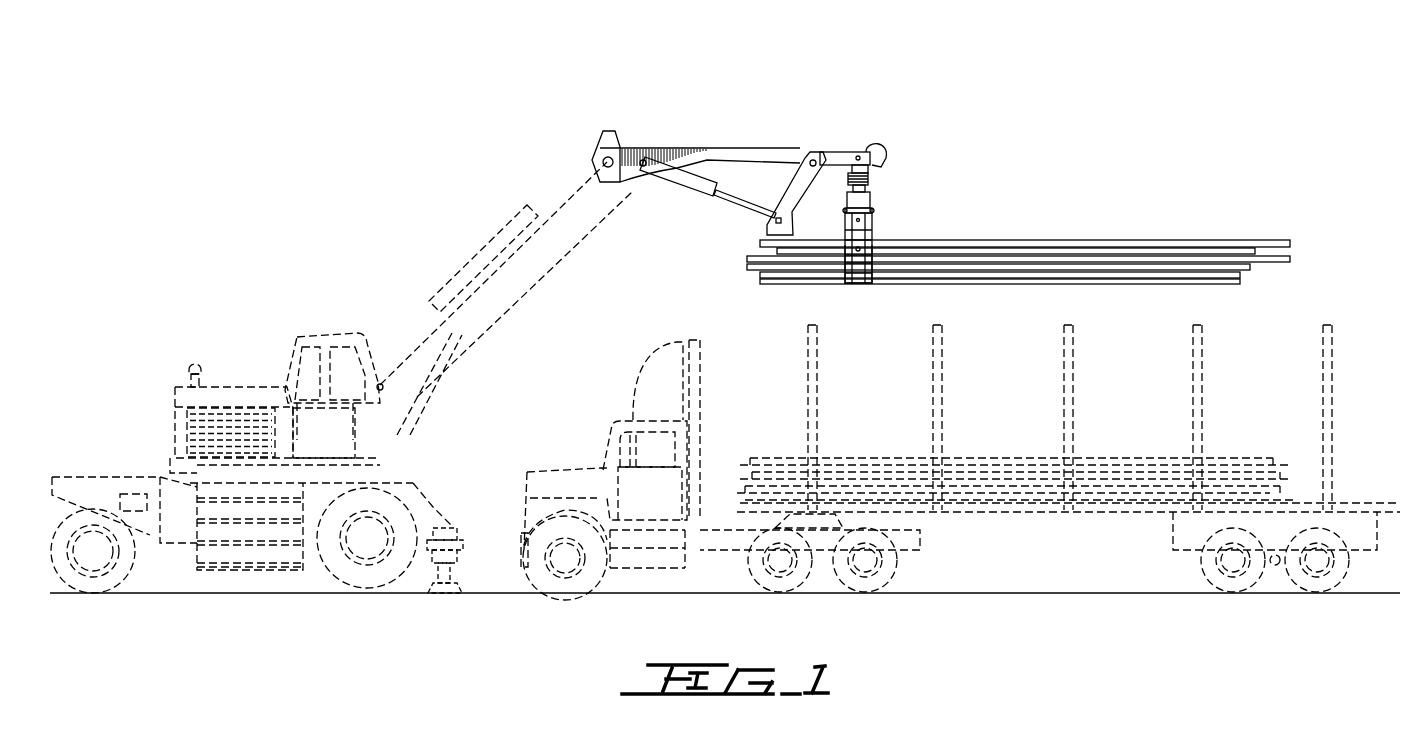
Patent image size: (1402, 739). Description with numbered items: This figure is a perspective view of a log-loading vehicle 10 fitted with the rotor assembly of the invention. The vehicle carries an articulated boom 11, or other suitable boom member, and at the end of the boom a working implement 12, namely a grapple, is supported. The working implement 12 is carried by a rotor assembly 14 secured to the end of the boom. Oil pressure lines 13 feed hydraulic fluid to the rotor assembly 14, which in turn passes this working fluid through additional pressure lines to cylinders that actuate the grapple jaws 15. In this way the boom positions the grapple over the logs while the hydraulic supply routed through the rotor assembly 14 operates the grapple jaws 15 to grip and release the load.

The log-loading vehicle 10 is at (361, 288).
The articulated boom 11 is at (632, 148).
The working implement 12 is at (895, 212).
The oil pressure lines 13 is at (877, 140).
The rotor assembly 14 is at (868, 180).
The grapple jaws 15 is at (873, 253).